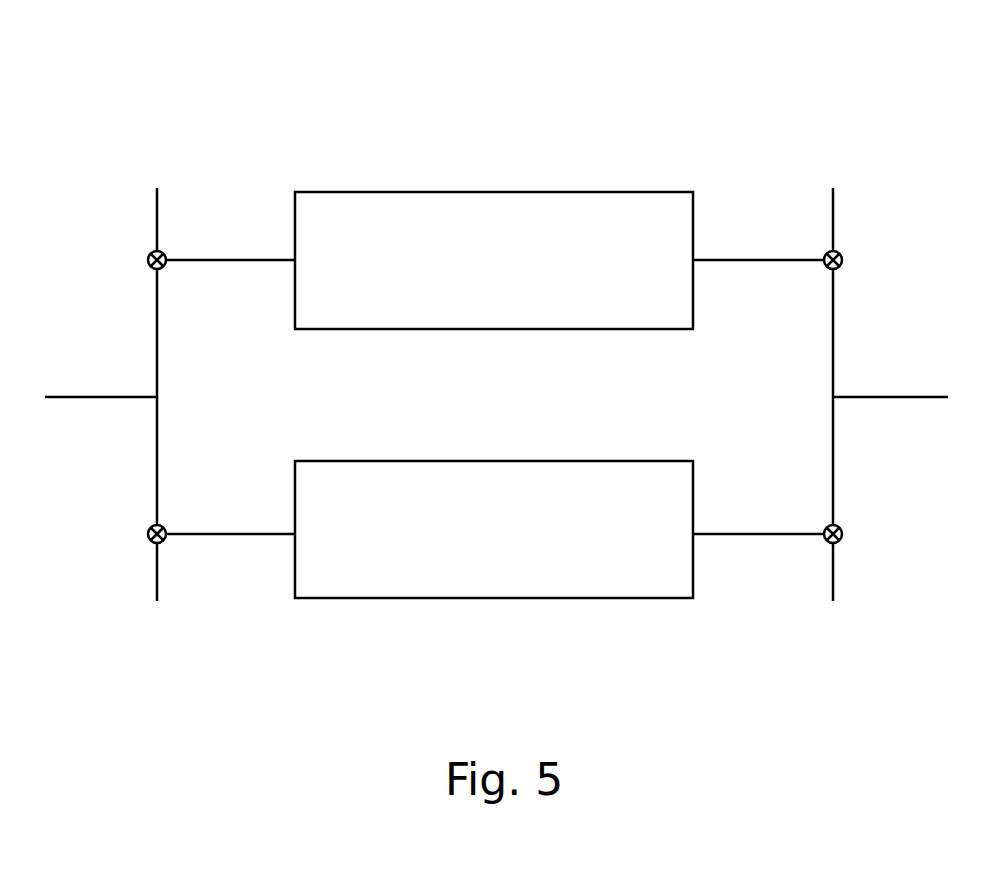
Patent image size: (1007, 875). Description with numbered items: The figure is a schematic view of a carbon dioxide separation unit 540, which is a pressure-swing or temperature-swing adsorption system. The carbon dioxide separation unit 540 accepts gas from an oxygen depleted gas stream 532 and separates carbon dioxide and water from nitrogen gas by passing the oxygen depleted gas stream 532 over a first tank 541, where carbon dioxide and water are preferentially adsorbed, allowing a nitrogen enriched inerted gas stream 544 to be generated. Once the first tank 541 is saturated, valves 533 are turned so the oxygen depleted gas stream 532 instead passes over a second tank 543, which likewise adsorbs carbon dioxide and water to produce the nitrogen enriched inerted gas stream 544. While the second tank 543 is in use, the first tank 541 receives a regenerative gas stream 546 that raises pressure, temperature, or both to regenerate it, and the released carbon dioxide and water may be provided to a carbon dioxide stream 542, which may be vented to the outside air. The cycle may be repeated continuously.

The carbon dioxide separation unit 540 is at (495, 274).
The first tank 541 is at (461, 182).
The second tank 543 is at (528, 614).
The valves 533 is at (170, 278).
The regenerative gas stream 546 is at (140, 222).
The carbon dioxide stream 542 is at (848, 217).
The oxygen depleted gas stream 532 is at (100, 380).
The nitrogen enriched inerted gas stream 544 is at (912, 385).